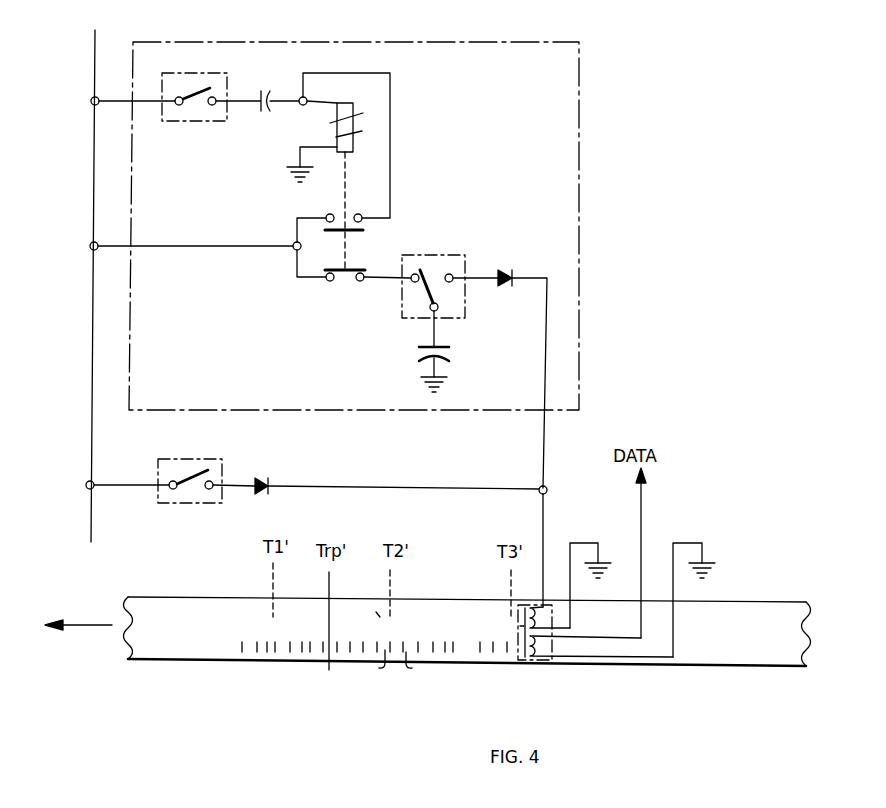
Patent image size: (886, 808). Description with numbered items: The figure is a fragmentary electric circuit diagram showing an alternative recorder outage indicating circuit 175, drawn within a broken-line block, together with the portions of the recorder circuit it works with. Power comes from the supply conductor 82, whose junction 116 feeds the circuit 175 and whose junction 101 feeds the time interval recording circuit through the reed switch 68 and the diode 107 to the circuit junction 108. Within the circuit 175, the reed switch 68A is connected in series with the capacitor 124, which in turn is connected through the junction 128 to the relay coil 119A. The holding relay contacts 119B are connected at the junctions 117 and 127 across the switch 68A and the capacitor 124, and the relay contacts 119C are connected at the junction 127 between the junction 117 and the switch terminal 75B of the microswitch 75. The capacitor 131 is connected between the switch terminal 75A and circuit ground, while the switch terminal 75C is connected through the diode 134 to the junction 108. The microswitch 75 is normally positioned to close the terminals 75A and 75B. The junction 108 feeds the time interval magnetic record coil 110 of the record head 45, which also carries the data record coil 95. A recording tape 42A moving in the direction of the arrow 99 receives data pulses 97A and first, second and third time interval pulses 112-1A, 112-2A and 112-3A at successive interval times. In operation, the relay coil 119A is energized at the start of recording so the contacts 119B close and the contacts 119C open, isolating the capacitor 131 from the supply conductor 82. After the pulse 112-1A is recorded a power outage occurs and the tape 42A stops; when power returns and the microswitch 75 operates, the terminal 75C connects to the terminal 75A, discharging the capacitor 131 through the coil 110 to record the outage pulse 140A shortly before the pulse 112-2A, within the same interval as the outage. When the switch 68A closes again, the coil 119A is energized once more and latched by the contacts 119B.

The recorder outage indicating circuit 175 is at (490, 42).
The supply conductor 82 is at (92, 328).
The conductor 116 is at (91, 101).
The reed switch 68A is at (211, 122).
The capacitor 124 is at (269, 90).
The junction 128 is at (303, 106).
The relay coil 119A is at (354, 124).
The holding relay contacts 119B is at (340, 216).
The junction 117 is at (91, 246).
The junction 127 is at (293, 249).
The relay contacts 119C is at (346, 285).
The microswitch 75 is at (425, 253).
The switch terminal 75B is at (411, 282).
The switch terminal 75C is at (455, 274).
The switch terminal 75A is at (438, 309).
The capacitor 131 is at (420, 353).
The diode 134 is at (510, 292).
The junction 101 is at (86, 484).
The reed switch 68 is at (160, 504).
The diode 107 is at (261, 478).
The circuit junction 108 is at (539, 488).
The recording tape 42A is at (213, 661).
The tape travel direction 99 is at (86, 623).
The time interval pulse 112-1A is at (272, 613).
The outage pulse 140A is at (380, 616).
The time interval pulse 112-2A is at (400, 618).
The time interval pulse 112-3A is at (507, 617).
The data pulses 97A is at (374, 668).
The head 45 is at (547, 662).
The coil 95 is at (525, 664).
The time interval magnetic record coil 110 is at (518, 626).